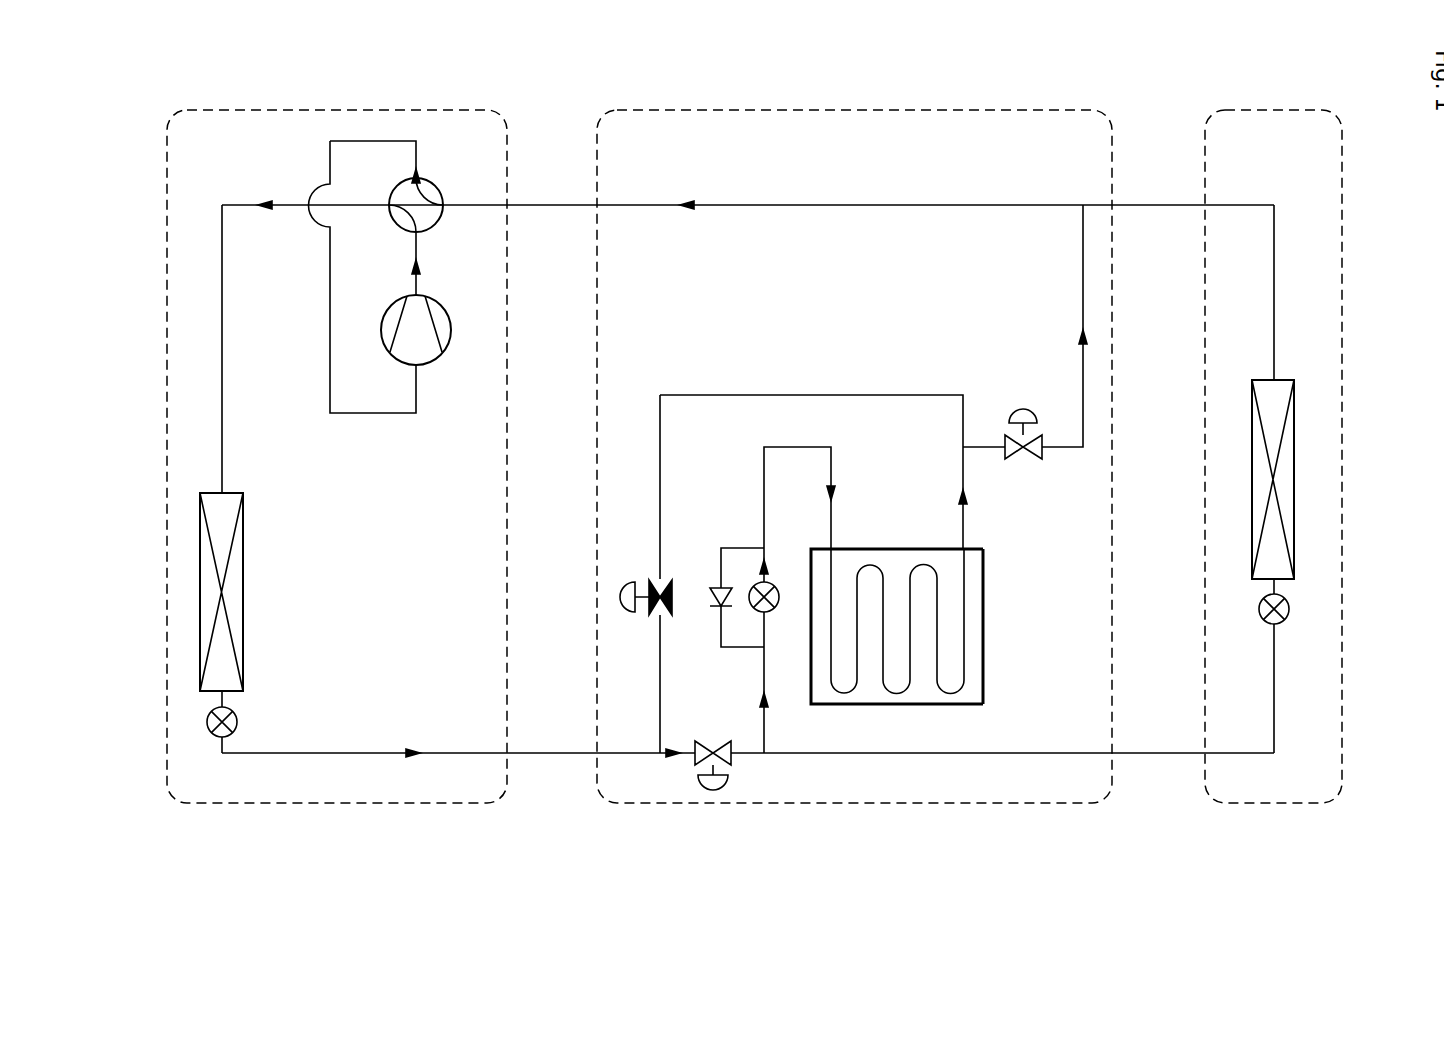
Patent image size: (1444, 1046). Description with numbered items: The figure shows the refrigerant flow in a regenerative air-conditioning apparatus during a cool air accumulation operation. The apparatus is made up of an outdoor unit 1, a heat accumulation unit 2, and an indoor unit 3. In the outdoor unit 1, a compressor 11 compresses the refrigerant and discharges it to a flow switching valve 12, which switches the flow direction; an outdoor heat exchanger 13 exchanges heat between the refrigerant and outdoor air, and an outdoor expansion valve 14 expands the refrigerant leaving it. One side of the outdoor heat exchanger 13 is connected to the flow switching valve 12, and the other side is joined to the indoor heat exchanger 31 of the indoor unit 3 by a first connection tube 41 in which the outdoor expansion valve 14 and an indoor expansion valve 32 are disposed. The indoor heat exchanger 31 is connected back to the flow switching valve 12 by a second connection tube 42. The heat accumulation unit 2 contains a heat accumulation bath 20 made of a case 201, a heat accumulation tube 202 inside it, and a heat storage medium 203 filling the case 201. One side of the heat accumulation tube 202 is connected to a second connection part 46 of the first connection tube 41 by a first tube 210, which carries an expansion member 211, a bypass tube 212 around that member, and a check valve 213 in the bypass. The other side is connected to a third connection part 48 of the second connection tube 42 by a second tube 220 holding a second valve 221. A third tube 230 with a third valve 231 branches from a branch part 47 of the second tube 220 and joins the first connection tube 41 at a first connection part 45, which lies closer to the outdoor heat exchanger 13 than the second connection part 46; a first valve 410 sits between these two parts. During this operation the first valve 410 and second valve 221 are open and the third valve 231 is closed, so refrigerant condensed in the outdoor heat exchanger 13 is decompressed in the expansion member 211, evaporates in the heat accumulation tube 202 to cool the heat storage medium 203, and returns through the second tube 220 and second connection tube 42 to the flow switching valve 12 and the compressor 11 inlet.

The outdoor unit 1 is at (335, 109).
The heat accumulation unit 2 is at (853, 109).
The indoor unit 3 is at (1272, 109).
The compressor 11 is at (444, 352).
The flow switching valve 12 is at (434, 187).
The outdoor heat exchanger 13 is at (244, 590).
The outdoor expansion valve 14 is at (238, 722).
The heat accumulation bath 20 is at (955, 626).
The case 201 is at (983, 660).
The heat accumulation tube 202 is at (964, 622).
The heat storage medium 203 is at (975, 589).
The first tube 210 is at (764, 482).
The expansion member 211 is at (776, 587).
The bypass tube 212 is at (721, 560).
The check valve 213 is at (712, 606).
The second tube 220 is at (1083, 272).
The second valve 221 is at (1022, 408).
The third tube 230 is at (752, 395).
The third valve 231 is at (621, 597).
The indoor heat exchanger 31 is at (1294, 478).
The indoor expansion valve 32 is at (1290, 609).
The first connection tube 41 is at (935, 753).
The second connection tube 42 is at (778, 205).
The first connection part 45 is at (660, 765).
The second connection part 46 is at (764, 760).
The branch part 47 is at (963, 447).
The third connection part 48 is at (1083, 205).
The first valve 410 is at (731, 758).